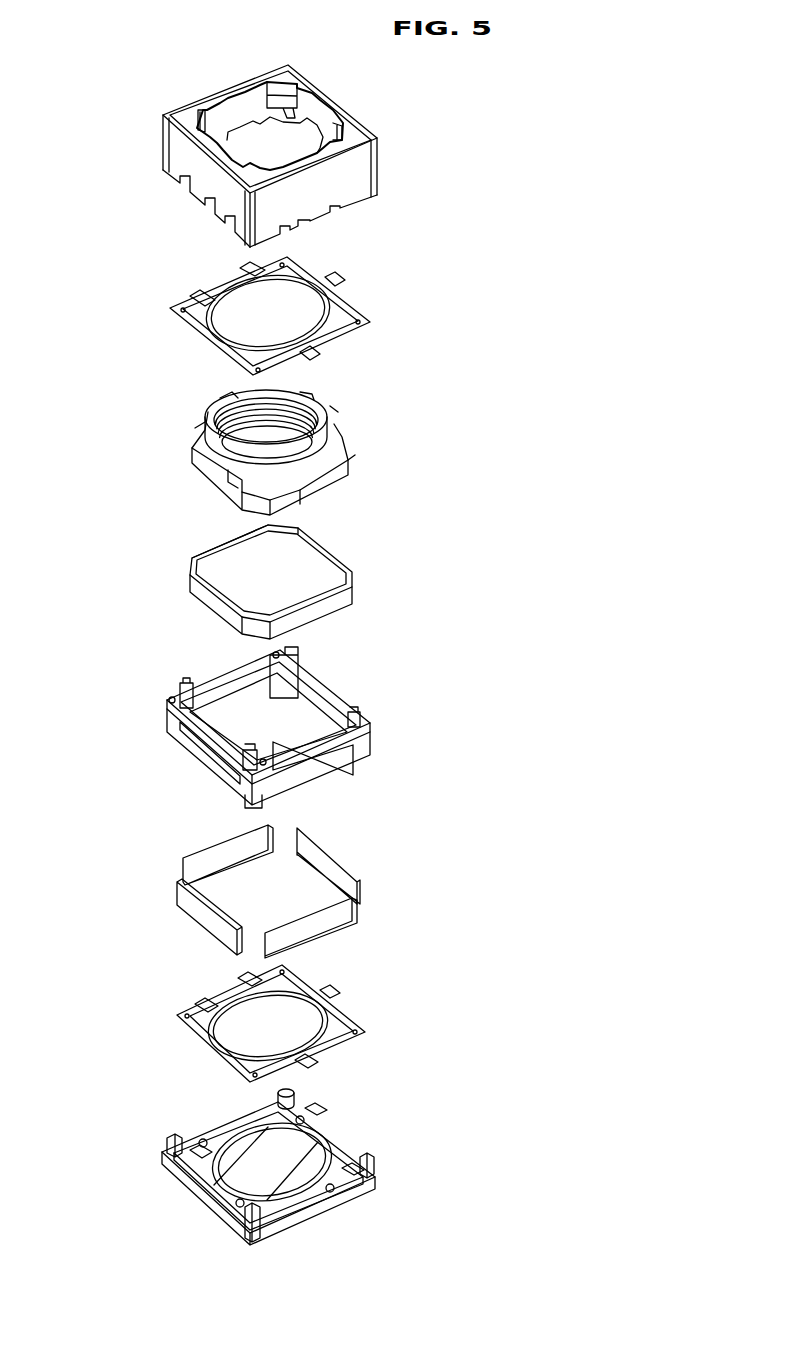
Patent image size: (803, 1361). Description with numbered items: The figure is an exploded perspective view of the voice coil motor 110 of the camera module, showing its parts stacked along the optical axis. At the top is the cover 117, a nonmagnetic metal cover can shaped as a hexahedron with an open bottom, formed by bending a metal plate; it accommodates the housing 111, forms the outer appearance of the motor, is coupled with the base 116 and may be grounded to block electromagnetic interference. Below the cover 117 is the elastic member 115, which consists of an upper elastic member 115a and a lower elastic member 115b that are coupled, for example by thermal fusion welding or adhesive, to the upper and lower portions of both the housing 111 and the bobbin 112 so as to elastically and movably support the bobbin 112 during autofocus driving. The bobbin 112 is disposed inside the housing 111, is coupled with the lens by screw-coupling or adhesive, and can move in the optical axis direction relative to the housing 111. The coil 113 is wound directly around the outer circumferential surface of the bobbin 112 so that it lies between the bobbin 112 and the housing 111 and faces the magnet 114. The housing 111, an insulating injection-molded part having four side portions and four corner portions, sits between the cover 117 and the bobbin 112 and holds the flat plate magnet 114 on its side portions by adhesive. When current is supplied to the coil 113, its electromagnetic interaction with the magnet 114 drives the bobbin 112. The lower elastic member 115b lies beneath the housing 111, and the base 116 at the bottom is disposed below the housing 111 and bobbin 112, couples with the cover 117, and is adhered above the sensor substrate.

The voice coil motor 110 is at (84, 107).
The cover 117 is at (358, 170).
The upper elastic member 115a is at (317, 352).
The bobbin 112 is at (193, 448).
The coil 113 is at (190, 585).
The housing 111 is at (165, 728).
The magnet 114 is at (180, 893).
The lower elastic member 115b is at (330, 1000).
The elastic member 115 is at (535, 552).
The base 116 is at (192, 1143).